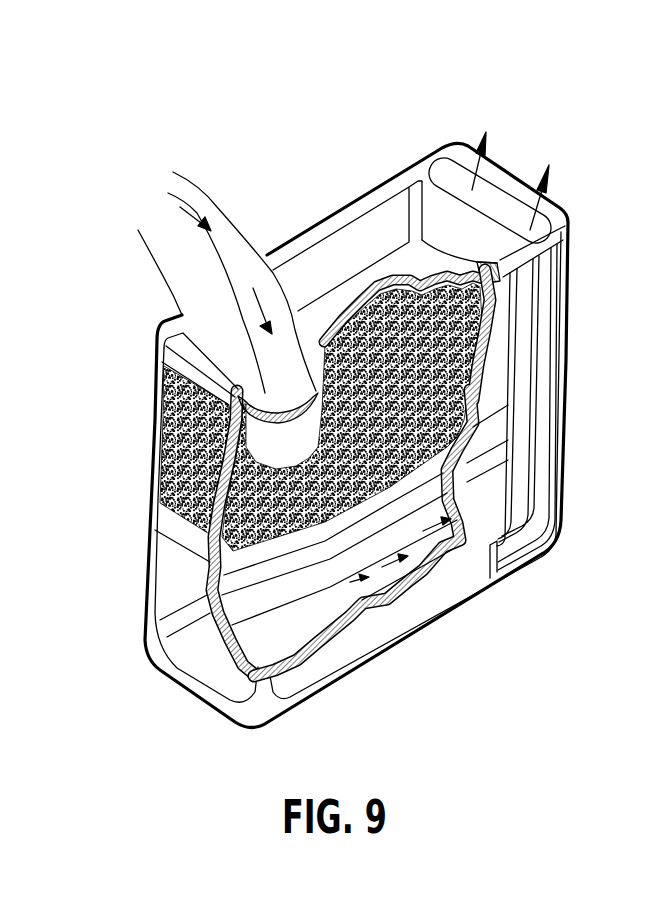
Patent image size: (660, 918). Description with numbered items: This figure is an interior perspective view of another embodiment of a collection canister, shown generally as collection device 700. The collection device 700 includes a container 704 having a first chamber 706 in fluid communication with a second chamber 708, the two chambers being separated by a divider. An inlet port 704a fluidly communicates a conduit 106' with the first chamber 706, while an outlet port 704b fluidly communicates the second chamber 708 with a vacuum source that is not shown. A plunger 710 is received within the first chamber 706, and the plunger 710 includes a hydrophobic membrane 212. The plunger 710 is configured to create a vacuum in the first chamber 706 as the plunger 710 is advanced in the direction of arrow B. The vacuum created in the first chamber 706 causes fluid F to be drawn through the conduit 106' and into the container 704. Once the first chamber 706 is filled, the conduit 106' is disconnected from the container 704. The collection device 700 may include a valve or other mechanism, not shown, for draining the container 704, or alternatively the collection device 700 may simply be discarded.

The collection device 700 is at (468, 88).
The conduit 106' is at (228, 263).
The container 704 is at (153, 613).
The inlet port 704a is at (178, 344).
The outlet port 704b is at (563, 214).
The first chamber 706 is at (363, 633).
The second chamber 708 is at (540, 303).
The plunger 710 is at (160, 543).
The hydrophobic membrane 212 is at (360, 503).
The direction of arrow B is at (191, 645).
The fluid F is at (493, 328).